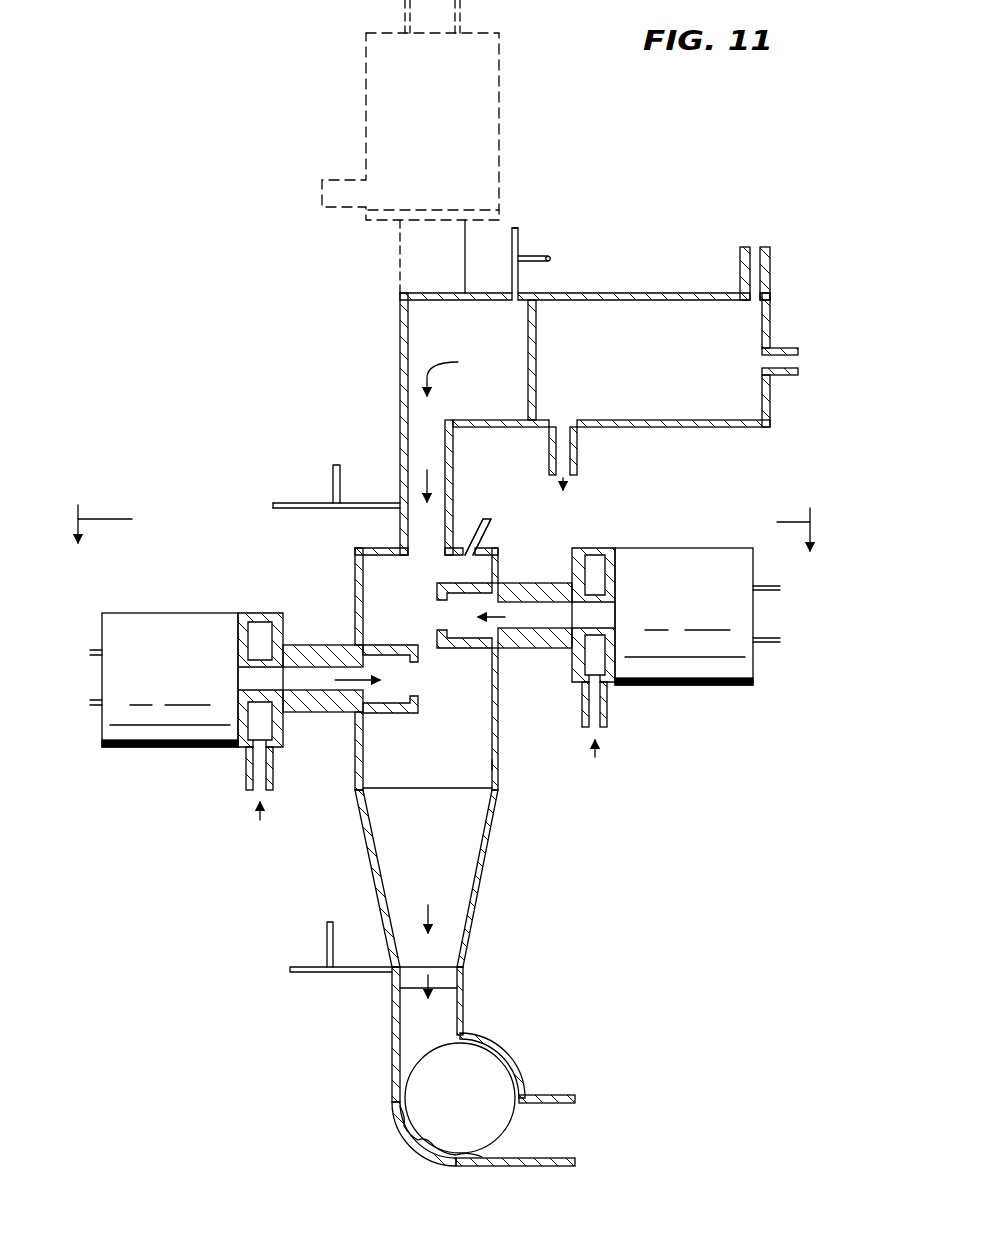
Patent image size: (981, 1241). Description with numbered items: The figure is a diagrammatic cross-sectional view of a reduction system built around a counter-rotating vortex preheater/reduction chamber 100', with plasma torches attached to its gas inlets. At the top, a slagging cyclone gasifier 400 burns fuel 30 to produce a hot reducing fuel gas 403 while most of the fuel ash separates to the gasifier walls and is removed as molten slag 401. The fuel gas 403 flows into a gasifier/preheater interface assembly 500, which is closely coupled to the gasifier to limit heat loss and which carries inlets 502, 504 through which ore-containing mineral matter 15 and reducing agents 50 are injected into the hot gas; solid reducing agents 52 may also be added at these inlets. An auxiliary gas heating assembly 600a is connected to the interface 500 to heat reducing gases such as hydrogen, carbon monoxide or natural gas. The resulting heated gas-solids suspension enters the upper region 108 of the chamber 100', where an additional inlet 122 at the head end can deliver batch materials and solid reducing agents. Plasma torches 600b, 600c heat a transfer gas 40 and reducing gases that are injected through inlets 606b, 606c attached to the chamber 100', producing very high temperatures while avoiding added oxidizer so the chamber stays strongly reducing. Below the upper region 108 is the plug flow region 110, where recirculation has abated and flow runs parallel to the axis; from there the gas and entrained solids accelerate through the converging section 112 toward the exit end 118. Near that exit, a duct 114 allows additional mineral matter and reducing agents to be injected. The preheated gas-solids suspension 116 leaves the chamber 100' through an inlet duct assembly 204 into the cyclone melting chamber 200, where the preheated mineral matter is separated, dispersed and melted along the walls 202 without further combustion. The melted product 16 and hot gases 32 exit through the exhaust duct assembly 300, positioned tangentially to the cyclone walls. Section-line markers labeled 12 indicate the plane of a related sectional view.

The auxiliary gas heating assembly 600a is at (501, 156).
The inlet 502 is at (521, 292).
The ore-containing mineral matter 15 is at (515, 227).
The reducing agent 50 is at (456, 594).
The solid reducing agent 52 is at (551, 258).
The gasifier/preheater interface assembly 500 is at (399, 355).
The slagging cyclone gasifier 400 is at (706, 292).
The hot reducing fuel gas 403 is at (514, 358).
The fuel 30 is at (805, 362).
The molten slag 401 is at (565, 427).
The inlet 504 is at (345, 509).
The inlet 122 is at (480, 540).
The section line 12 is at (446, 548).
The upper region 108 is at (418, 630).
The plug flow region 110 is at (450, 775).
The inlet 606b is at (316, 643).
The plasma torch 600b is at (222, 750).
The inlet 606c is at (538, 651).
The plasma torch 600c is at (683, 688).
The reduction chamber 100' is at (534, 771).
The heat transfer gas 40 is at (601, 765).
The converging section 112 is at (445, 890).
The exit end 118 is at (506, 878).
The duct 114 is at (333, 974).
The preheated gas-solids suspension 116 is at (427, 1034).
The inlet duct assembly 204 is at (470, 1028).
The cyclone melting chamber 200 is at (510, 1058).
The walls 202 is at (490, 1053).
The melted glass product 16 is at (428, 1139).
The hot gases 32 is at (580, 1125).
The exhaust duct assembly 300 is at (540, 1168).